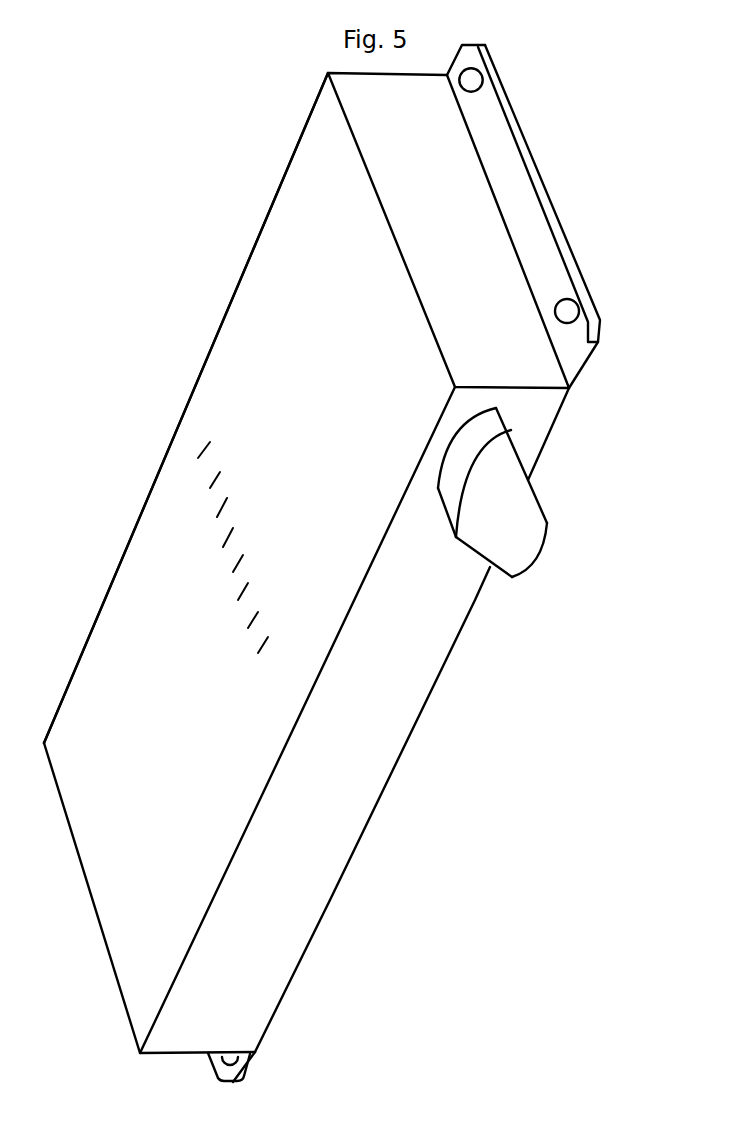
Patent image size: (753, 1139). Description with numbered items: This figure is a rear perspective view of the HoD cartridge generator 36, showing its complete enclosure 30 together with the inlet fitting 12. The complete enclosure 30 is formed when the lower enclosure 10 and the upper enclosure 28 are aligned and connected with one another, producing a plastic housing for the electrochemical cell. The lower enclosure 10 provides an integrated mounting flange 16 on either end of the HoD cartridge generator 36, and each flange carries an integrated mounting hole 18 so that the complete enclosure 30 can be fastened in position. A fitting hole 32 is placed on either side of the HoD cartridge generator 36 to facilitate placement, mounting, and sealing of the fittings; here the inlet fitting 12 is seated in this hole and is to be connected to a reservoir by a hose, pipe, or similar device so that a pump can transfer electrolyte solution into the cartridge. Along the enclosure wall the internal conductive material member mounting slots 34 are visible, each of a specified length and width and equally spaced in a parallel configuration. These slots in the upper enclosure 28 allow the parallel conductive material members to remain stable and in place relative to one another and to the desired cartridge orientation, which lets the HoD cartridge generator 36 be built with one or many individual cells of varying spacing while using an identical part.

The lower enclosure 10 is at (313, 902).
The inlet fitting 12 is at (542, 503).
The integrated mounting flange 16 is at (530, 174).
The integrated mounting hole 18 is at (580, 312).
The upper enclosure 28 is at (257, 301).
The complete enclosure 30 is at (118, 572).
The fitting hole 32 is at (503, 417).
The internal conductive material member mounting slot 34 is at (207, 448).
The HoD cartridge generator 36 is at (435, 680).